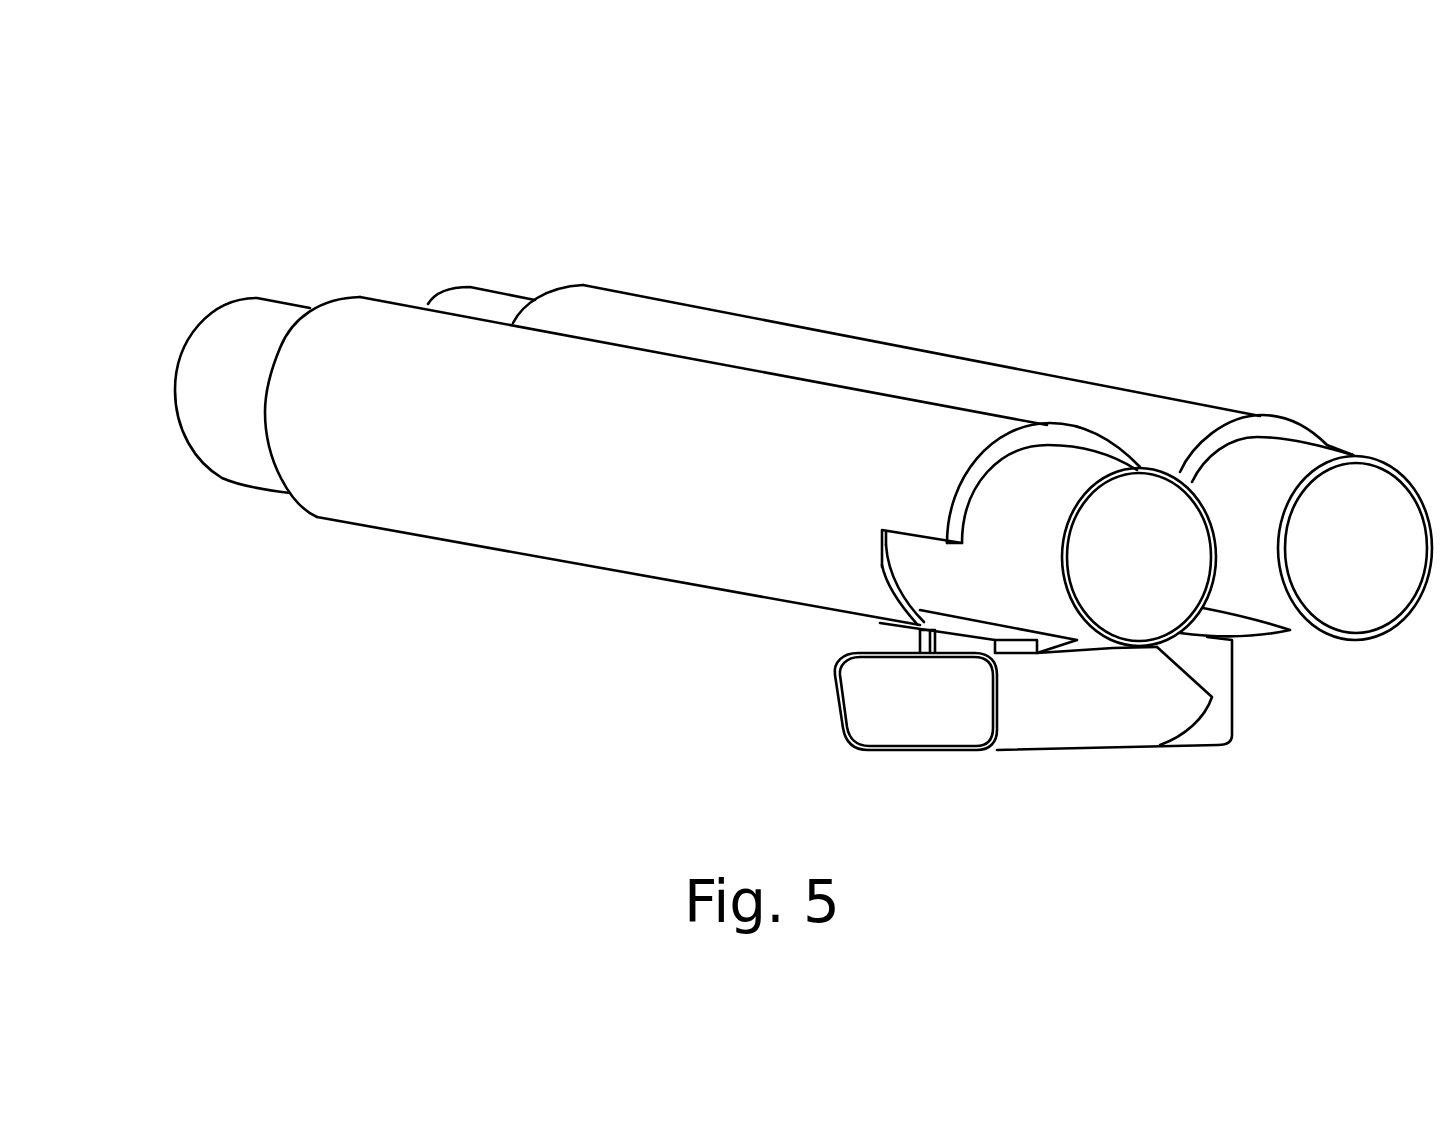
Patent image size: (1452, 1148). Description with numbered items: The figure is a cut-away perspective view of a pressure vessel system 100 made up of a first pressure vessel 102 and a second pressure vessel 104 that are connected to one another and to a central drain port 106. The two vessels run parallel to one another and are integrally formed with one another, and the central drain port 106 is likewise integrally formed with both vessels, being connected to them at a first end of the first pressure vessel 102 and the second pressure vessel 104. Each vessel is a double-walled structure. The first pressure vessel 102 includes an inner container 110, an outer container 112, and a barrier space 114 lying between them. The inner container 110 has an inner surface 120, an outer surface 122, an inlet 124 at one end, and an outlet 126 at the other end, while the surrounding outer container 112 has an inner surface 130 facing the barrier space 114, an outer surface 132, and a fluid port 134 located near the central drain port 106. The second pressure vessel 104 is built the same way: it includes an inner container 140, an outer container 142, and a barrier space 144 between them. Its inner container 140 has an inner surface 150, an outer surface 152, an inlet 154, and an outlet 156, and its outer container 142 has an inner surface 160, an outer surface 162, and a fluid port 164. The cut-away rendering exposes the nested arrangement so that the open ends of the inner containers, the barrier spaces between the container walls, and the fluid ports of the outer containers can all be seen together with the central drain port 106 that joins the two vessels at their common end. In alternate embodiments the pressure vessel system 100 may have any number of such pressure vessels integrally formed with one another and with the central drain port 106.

The pressure vessel system 100 is at (803, 176).
The first pressure vessel 102 is at (458, 580).
The second pressure vessel 104 is at (972, 466).
The central drain port 106 is at (1006, 748).
The inner container 110 is at (227, 447).
The outer container 112 is at (320, 478).
The barrier space 114 is at (915, 563).
The inner surface 120 is at (1140, 617).
The outer surface 122 is at (1027, 595).
The inlet 124 is at (198, 322).
The outlet 126 is at (1152, 566).
The inner surface 130 is at (940, 620).
The outer surface 132 is at (517, 497).
The fluid port 134 is at (960, 640).
The inner container 140 is at (496, 303).
The outer container 142 is at (585, 300).
The barrier space 144 is at (635, 315).
The inner surface 150 is at (1345, 528).
The outer surface 152 is at (1247, 480).
The inlet 154 is at (1352, 598).
The outlet 156 is at (434, 291).
The inner surface 160 is at (787, 350).
The outer surface 162 is at (868, 366).
The fluid port 164 is at (1198, 640).